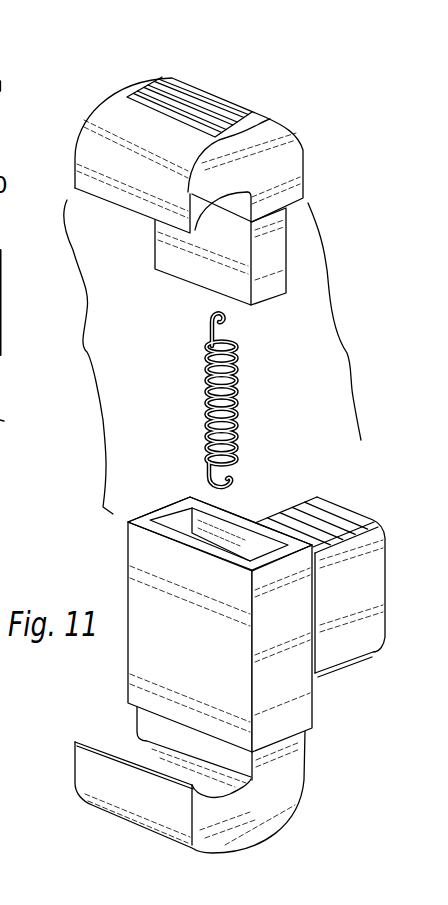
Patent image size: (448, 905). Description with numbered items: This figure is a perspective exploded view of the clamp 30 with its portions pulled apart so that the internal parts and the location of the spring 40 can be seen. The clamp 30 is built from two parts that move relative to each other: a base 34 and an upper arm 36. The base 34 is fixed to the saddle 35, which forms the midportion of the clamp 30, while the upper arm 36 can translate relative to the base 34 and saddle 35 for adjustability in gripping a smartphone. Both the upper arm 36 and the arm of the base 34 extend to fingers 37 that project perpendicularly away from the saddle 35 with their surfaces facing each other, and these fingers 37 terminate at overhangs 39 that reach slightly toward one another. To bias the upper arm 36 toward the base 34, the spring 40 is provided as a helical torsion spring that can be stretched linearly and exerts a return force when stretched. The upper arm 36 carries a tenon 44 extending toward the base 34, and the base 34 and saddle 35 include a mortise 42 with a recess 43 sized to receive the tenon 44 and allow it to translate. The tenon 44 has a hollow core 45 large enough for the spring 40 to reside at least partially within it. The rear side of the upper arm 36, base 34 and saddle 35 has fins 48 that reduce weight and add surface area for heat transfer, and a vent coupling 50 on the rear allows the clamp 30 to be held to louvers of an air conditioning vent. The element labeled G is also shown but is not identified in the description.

The clamp 30 is at (345, 740).
The base 34 is at (267, 806).
The saddle 35 is at (197, 662).
The upper arm 36 is at (284, 185).
The fingers 37 is at (222, 181).
The overhangs 39 is at (97, 748).
The spring 40 is at (262, 398).
The mortise 42 is at (157, 515).
The recess 43 is at (207, 527).
The tenon 44 is at (205, 276).
The hollow core 45 is at (258, 322).
The fins 48 is at (247, 110).
The vent coupling 50 is at (386, 552).
The direction G is at (398, 663).